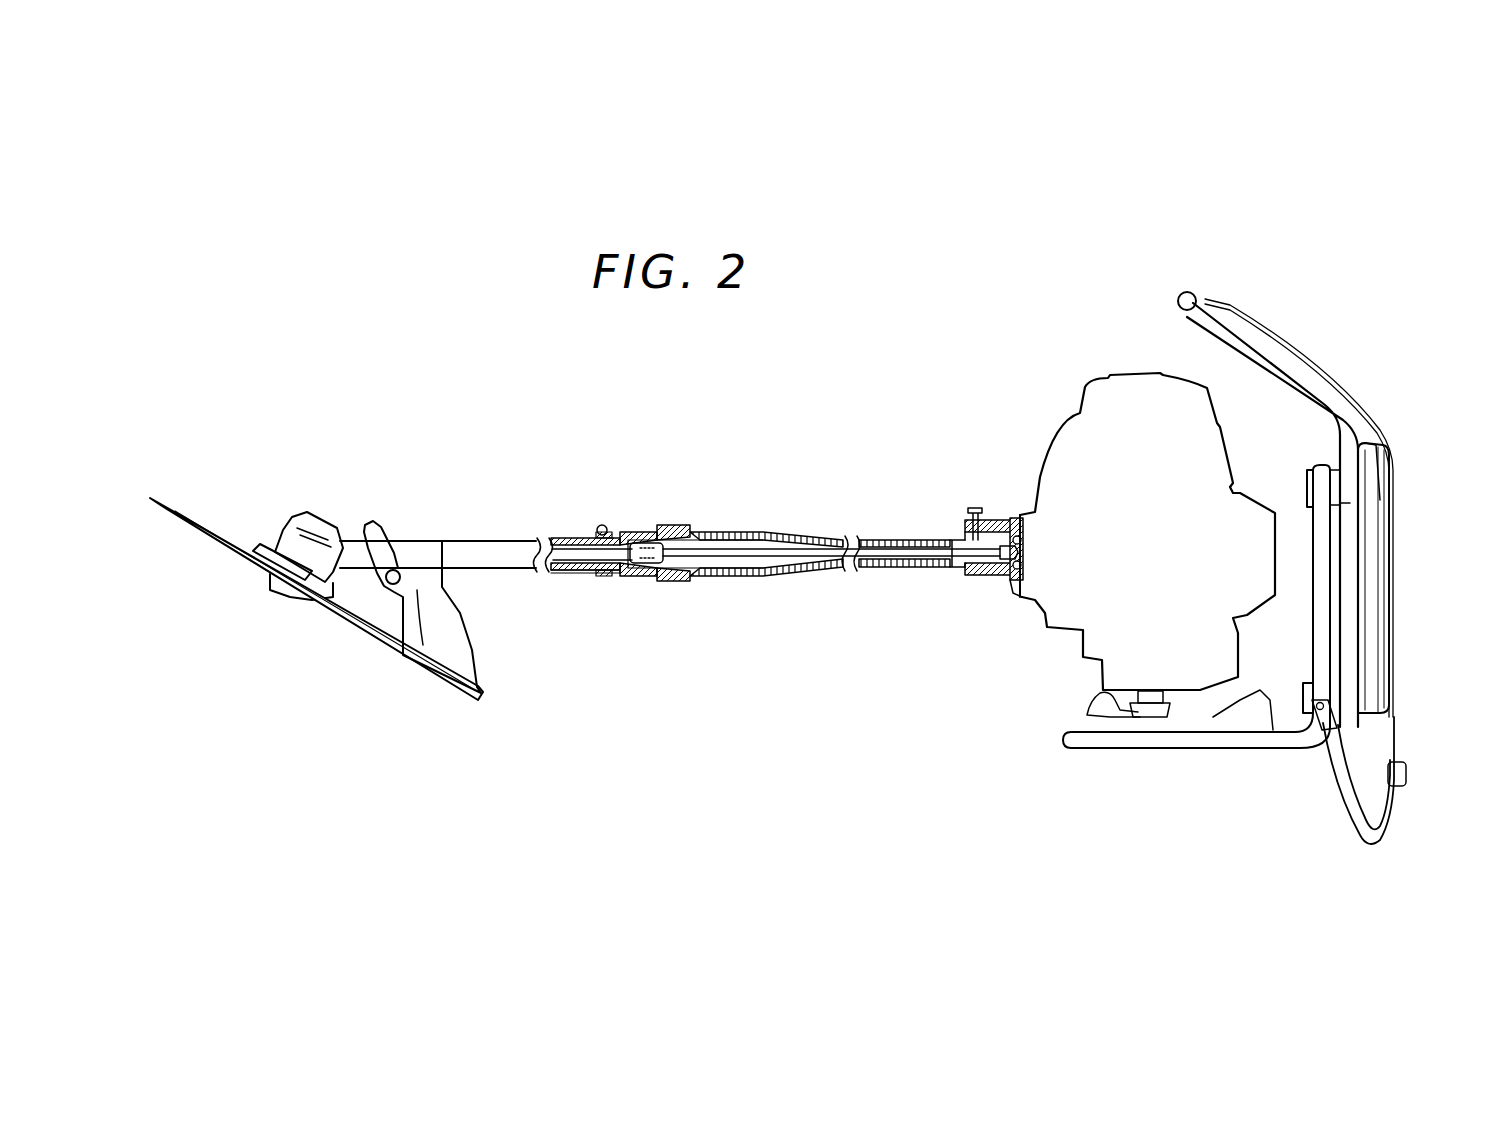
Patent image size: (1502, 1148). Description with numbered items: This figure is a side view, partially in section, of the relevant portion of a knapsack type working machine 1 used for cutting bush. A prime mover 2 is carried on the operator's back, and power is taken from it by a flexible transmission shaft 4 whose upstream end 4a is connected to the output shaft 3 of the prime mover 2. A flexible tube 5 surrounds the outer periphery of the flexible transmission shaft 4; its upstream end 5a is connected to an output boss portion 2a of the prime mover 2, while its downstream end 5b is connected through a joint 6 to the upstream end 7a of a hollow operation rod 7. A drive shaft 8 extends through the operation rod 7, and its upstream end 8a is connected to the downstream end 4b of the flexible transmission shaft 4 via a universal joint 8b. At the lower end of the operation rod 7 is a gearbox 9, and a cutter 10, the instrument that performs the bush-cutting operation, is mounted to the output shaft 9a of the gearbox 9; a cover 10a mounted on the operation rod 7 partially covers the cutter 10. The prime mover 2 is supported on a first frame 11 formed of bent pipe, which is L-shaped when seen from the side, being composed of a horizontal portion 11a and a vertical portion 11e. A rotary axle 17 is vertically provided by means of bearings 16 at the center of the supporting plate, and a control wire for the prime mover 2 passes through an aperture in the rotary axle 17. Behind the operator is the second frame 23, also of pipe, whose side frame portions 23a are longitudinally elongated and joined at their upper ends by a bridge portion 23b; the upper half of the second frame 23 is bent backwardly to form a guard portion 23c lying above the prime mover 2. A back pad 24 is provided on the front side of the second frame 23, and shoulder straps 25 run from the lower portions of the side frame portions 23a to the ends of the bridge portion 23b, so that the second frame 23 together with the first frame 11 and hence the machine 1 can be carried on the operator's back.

The working machine 1 is at (1240, 280).
The prime mover 2 is at (1098, 432).
The output boss portion 2a is at (998, 517).
The output shaft 3 is at (1000, 582).
The flexible transmission shaft 4 is at (810, 580).
The upstream end of flexible transmission shaft 4a is at (1027, 540).
The downstream end of flexible transmission shaft 4b is at (625, 578).
The flexible tube 5 is at (816, 535).
The upstream end of flexible tube 5a is at (950, 575).
The downstream end of flexible tube 5b is at (732, 580).
The joint 6 is at (680, 580).
The operation rod 7 is at (482, 548).
The upstream end of operation rod 7a is at (610, 578).
The drive shaft 8 is at (565, 537).
The upstream end of drive shaft 8a is at (623, 533).
The universal joint 8b is at (673, 530).
The gearbox 9 is at (290, 538).
The output shaft of gearbox 9a is at (293, 592).
The cutter 10 is at (205, 538).
The cover 10a is at (455, 628).
The first frame 11 is at (1090, 750).
The horizontal portion 11a is at (1250, 750).
The vertical portion 11e is at (1312, 537).
The bearings 16 is at (1160, 703).
The rotary axle 17 is at (1148, 712).
The second frame 23 is at (1322, 393).
The side frame portions 23a is at (1345, 575).
The bridge portion 23b is at (1180, 292).
The guard portion 23c is at (1273, 357).
The back pad 24 is at (1373, 460).
The shoulder straps 25 is at (1392, 815).